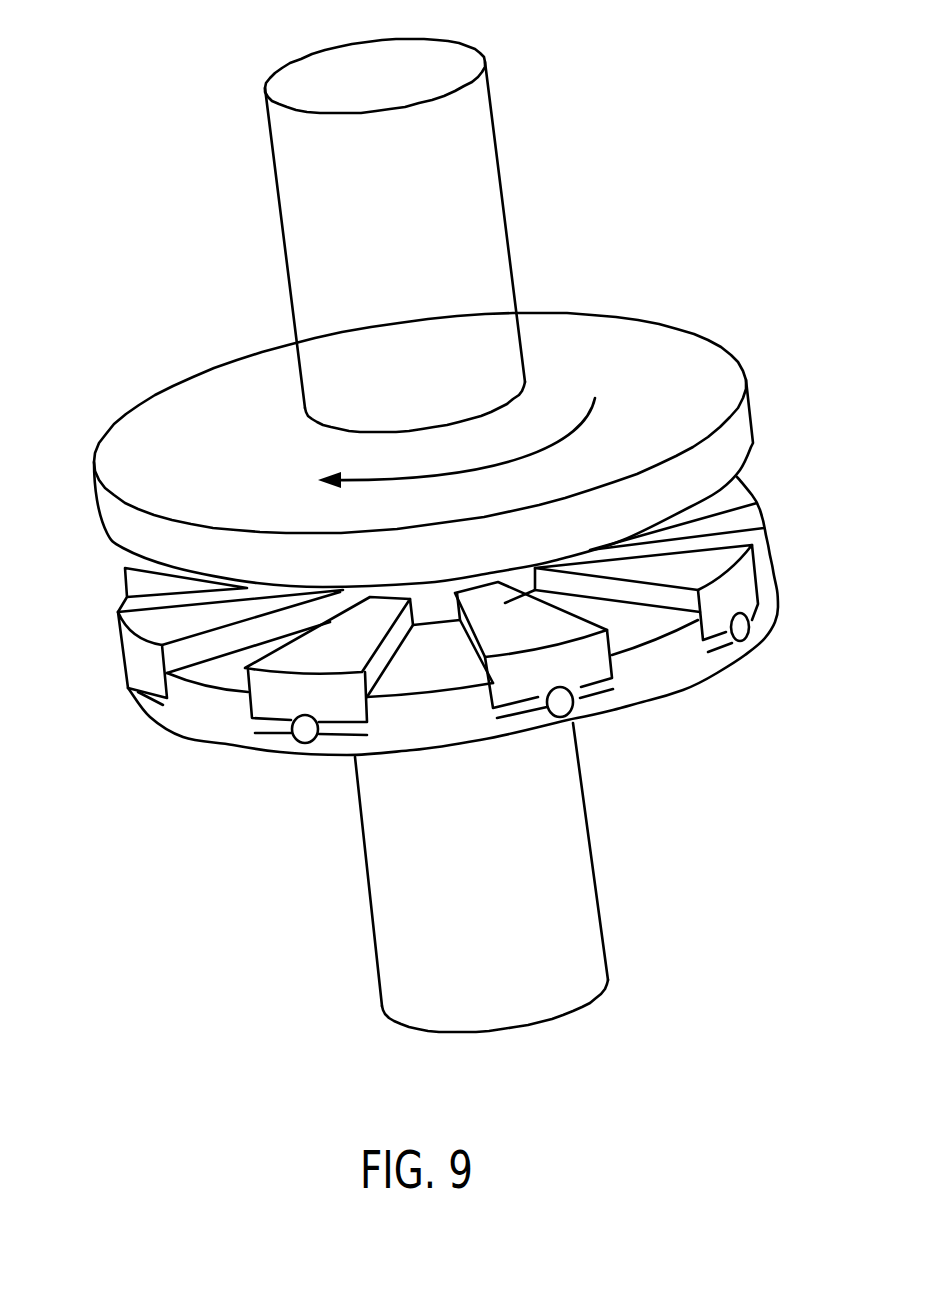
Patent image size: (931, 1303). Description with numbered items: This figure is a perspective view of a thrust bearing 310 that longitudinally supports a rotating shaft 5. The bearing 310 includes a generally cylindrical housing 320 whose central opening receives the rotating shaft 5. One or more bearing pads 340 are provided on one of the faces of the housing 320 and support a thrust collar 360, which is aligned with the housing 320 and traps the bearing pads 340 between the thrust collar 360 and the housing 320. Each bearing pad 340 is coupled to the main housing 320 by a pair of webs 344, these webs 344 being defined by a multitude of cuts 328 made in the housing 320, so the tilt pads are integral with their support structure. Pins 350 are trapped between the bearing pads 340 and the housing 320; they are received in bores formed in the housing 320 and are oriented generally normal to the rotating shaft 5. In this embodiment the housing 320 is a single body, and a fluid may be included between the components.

The rotating shaft 5 is at (282, 160).
The thrust bearing 310 is at (635, 208).
The housing 320 is at (678, 668).
The cuts 328 is at (265, 720).
The bearing pads 340 is at (747, 593).
The webs 344 is at (600, 690).
The pins 350 is at (305, 733).
The thrust collar 360 is at (122, 418).